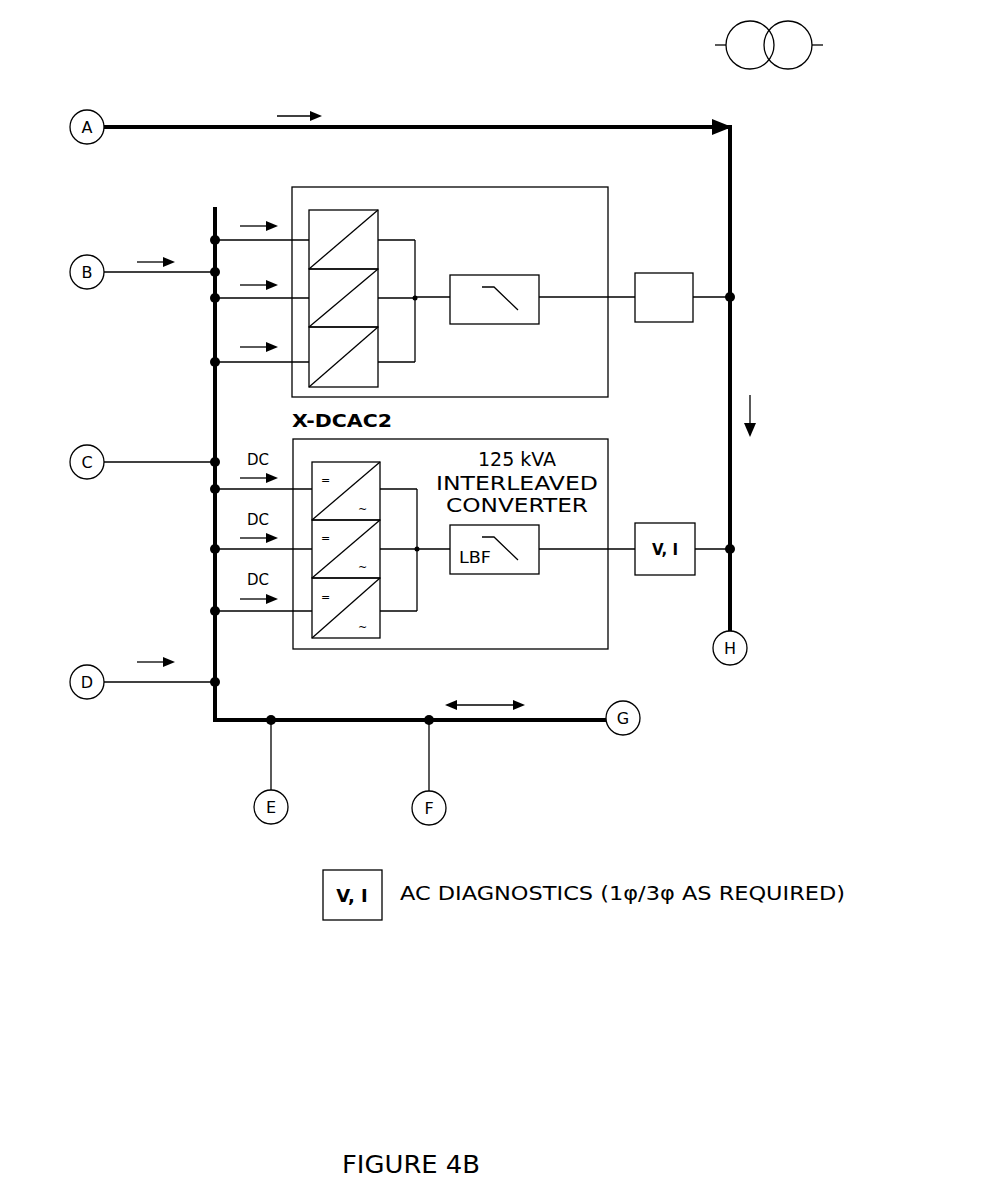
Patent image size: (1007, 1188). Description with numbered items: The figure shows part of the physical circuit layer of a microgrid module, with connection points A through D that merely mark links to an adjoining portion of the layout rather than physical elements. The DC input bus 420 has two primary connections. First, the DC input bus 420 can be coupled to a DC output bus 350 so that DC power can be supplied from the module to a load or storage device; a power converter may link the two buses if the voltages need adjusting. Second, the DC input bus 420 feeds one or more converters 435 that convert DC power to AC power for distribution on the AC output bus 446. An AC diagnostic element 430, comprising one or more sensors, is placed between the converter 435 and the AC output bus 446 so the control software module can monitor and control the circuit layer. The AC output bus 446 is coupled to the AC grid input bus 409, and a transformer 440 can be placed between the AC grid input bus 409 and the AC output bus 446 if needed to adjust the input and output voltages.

The AC grid input bus 409 is at (418, 95).
The transformer 440 is at (685, 70).
The converter 435 is at (425, 277).
The AC diagnostic element 430 is at (682, 282).
The AC output bus 446 is at (764, 378).
The DC input bus 420 is at (229, 441).
The DC output bus 350 is at (409, 690).